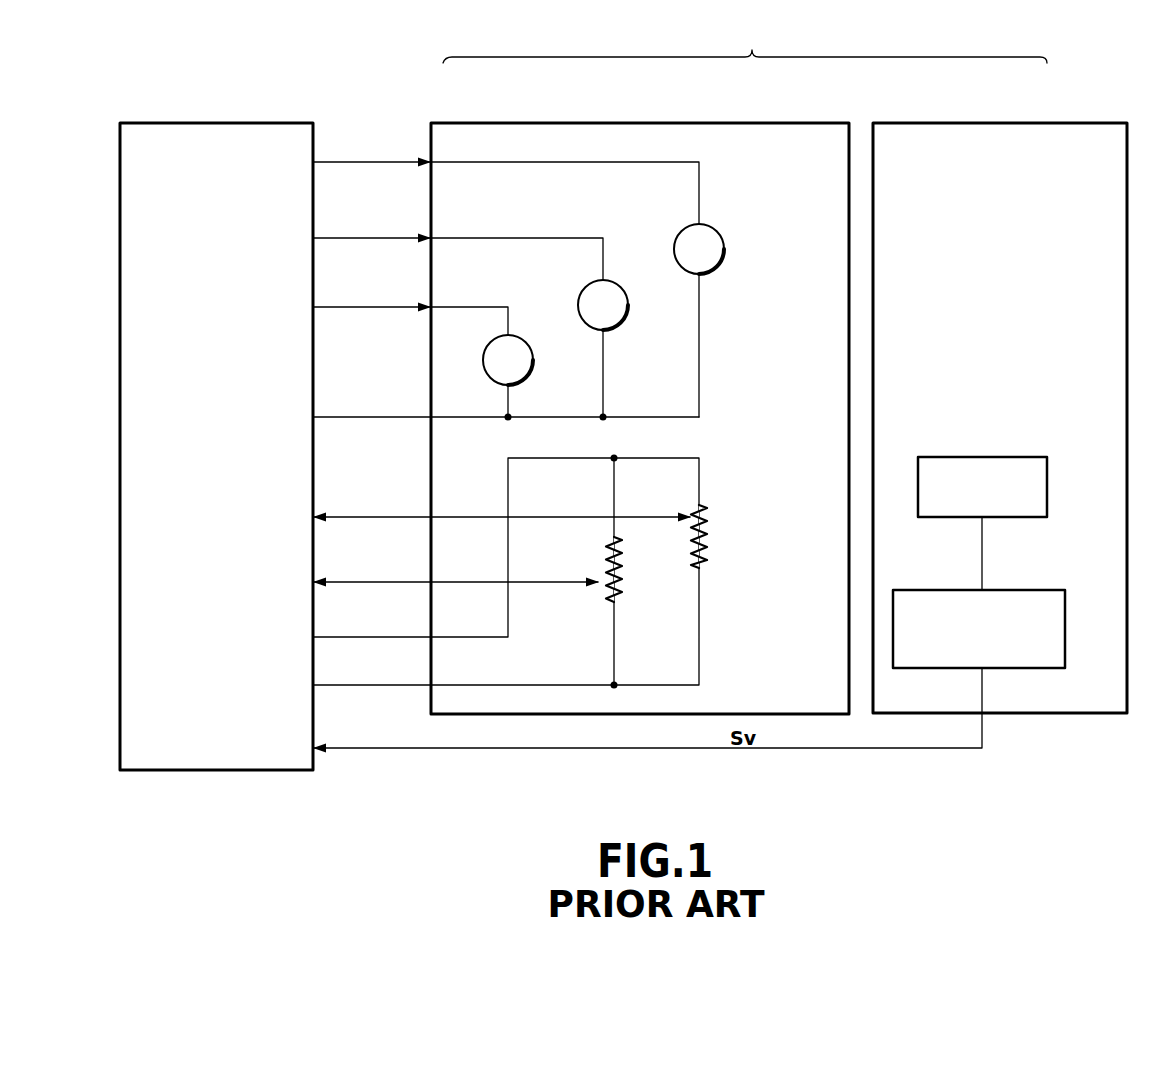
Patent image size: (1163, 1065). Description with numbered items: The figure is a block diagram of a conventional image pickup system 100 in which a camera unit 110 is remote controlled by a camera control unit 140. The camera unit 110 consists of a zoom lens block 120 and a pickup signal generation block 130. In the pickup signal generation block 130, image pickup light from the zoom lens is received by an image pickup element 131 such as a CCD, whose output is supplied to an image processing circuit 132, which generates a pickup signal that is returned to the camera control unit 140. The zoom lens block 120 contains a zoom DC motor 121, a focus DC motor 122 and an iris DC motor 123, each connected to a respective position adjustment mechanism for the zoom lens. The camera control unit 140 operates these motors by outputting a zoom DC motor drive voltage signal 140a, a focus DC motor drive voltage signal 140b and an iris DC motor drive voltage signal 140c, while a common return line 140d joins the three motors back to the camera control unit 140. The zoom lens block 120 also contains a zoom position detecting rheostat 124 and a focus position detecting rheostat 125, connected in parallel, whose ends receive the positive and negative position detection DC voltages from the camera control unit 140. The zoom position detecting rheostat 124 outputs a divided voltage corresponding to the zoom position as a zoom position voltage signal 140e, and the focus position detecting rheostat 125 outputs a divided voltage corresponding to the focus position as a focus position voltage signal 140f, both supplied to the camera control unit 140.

The image pickup system 100 is at (697, 766).
The camera unit 110 is at (745, 42).
The zoom lens block 120 is at (478, 123).
The zoom DC motor 121 is at (725, 262).
The focus DC motor 122 is at (630, 313).
The iris DC motor 123 is at (534, 360).
The zoom position detecting rheostat 124 is at (712, 537).
The focus position detecting rheostat 125 is at (626, 590).
The pickup signal generation block 130 is at (946, 123).
The image pickup element 131 is at (1018, 457).
The image processing circuit 132 is at (1033, 590).
The camera control unit 140 is at (178, 123).
The zoom DC motor drive voltage signal 140a is at (363, 160).
The focus DC motor drive voltage signal 140b is at (363, 236).
The iris DC motor drive voltage signal 140c is at (363, 305).
The motor common line 140d is at (360, 415).
The zoom position voltage signal 140e is at (360, 515).
The focus position voltage signal 140f is at (360, 580).